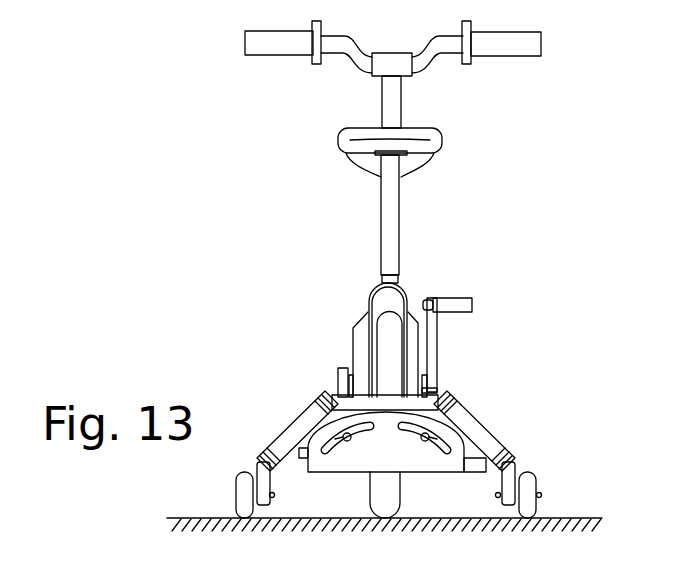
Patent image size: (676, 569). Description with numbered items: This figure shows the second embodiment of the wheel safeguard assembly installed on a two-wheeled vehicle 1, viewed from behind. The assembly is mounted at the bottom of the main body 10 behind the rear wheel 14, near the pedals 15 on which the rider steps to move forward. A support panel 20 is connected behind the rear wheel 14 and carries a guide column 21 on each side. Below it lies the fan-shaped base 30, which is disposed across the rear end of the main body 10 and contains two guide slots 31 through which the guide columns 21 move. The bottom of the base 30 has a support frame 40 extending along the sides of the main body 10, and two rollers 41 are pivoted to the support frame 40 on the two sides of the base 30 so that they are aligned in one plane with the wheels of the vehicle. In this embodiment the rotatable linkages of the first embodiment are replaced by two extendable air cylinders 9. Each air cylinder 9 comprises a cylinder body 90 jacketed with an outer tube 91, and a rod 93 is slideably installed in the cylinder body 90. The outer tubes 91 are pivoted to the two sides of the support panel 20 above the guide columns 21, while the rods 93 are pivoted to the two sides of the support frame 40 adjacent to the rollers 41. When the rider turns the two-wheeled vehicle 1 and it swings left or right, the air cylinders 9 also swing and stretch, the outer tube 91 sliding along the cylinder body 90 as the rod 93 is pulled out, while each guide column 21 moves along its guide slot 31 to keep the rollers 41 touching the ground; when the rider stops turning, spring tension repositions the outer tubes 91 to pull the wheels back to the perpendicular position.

The two-wheeled vehicle 1 is at (328, 185).
The main body 10 is at (393, 232).
The rear wheel 14 is at (385, 343).
The pedals 15 is at (456, 298).
The support panel 20 is at (378, 392).
The air cylinder 9 is at (278, 438).
The cylinder body 90 is at (292, 440).
The outer tube 91 is at (318, 393).
The rod 93 is at (258, 467).
The guide column 21 is at (457, 428).
The support frame 40 is at (520, 468).
The roller 41 is at (537, 483).
The base 30 is at (392, 465).
The guide slot 31 is at (362, 435).